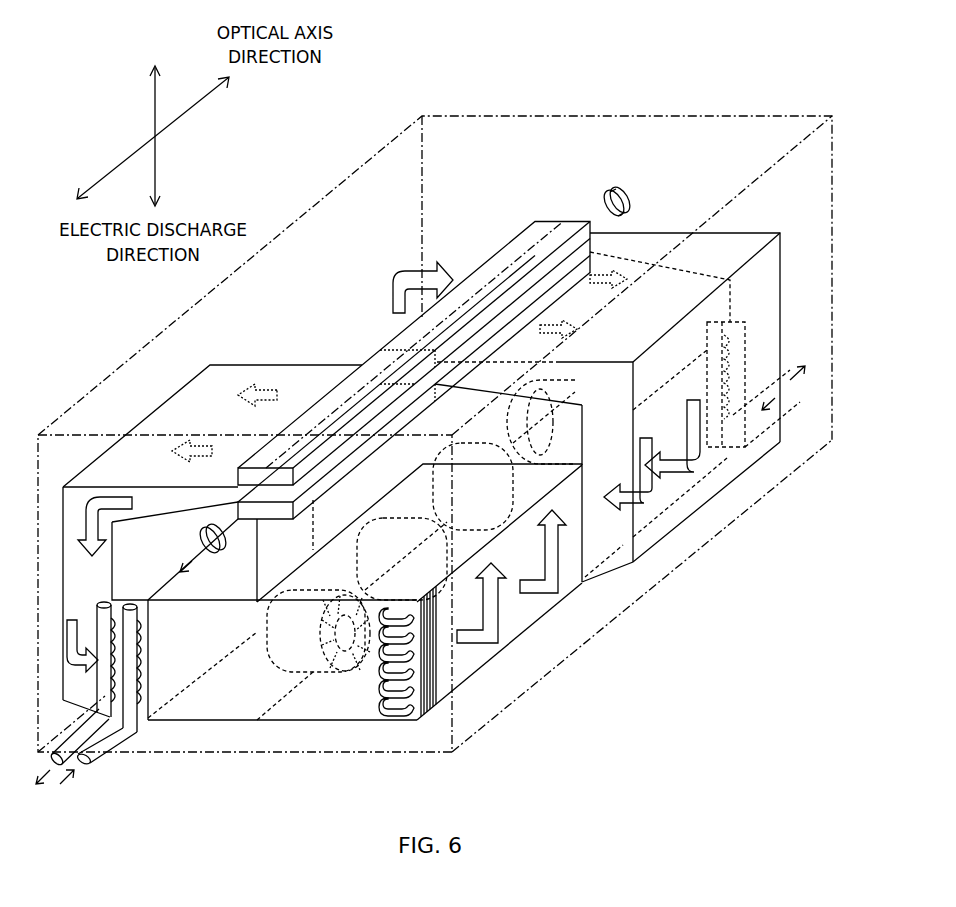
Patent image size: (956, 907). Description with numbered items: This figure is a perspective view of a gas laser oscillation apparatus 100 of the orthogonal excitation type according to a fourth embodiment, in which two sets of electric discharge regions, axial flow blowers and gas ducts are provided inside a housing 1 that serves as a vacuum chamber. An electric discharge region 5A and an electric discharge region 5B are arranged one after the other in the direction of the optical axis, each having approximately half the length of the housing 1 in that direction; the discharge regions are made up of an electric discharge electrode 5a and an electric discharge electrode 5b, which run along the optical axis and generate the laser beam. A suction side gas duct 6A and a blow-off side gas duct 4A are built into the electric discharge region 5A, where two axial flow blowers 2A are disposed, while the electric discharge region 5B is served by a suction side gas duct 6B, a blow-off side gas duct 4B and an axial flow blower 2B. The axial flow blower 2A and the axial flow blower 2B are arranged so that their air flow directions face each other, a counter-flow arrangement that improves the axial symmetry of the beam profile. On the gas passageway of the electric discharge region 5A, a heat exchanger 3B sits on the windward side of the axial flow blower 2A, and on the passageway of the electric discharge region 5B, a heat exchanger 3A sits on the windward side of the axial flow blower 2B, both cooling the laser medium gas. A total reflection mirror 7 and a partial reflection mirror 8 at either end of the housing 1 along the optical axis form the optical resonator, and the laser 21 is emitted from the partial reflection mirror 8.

The gas laser oscillation apparatus 100 is at (840, 47).
The housing 1 is at (540, 116).
The axial flow blower 2A is at (358, 574).
The axial flow blower 2B is at (584, 407).
The heat exchanger 3A is at (524, 638).
The heat exchanger 3B is at (212, 668).
The blow-off side gas duct 4A is at (258, 721).
The blow-off side gas duct 4B is at (640, 346).
The electric discharge region 5A is at (349, 372).
The electric discharge region 5B is at (482, 267).
The electric discharge electrode 5a is at (564, 230).
The electric discharge electrode 5b is at (548, 298).
The suction side gas duct 6A is at (268, 362).
The suction side gas duct 6B is at (744, 246).
The total reflection mirror 7 is at (630, 201).
The partial reflection mirror 8 is at (226, 538).
The laser 21 is at (198, 562).